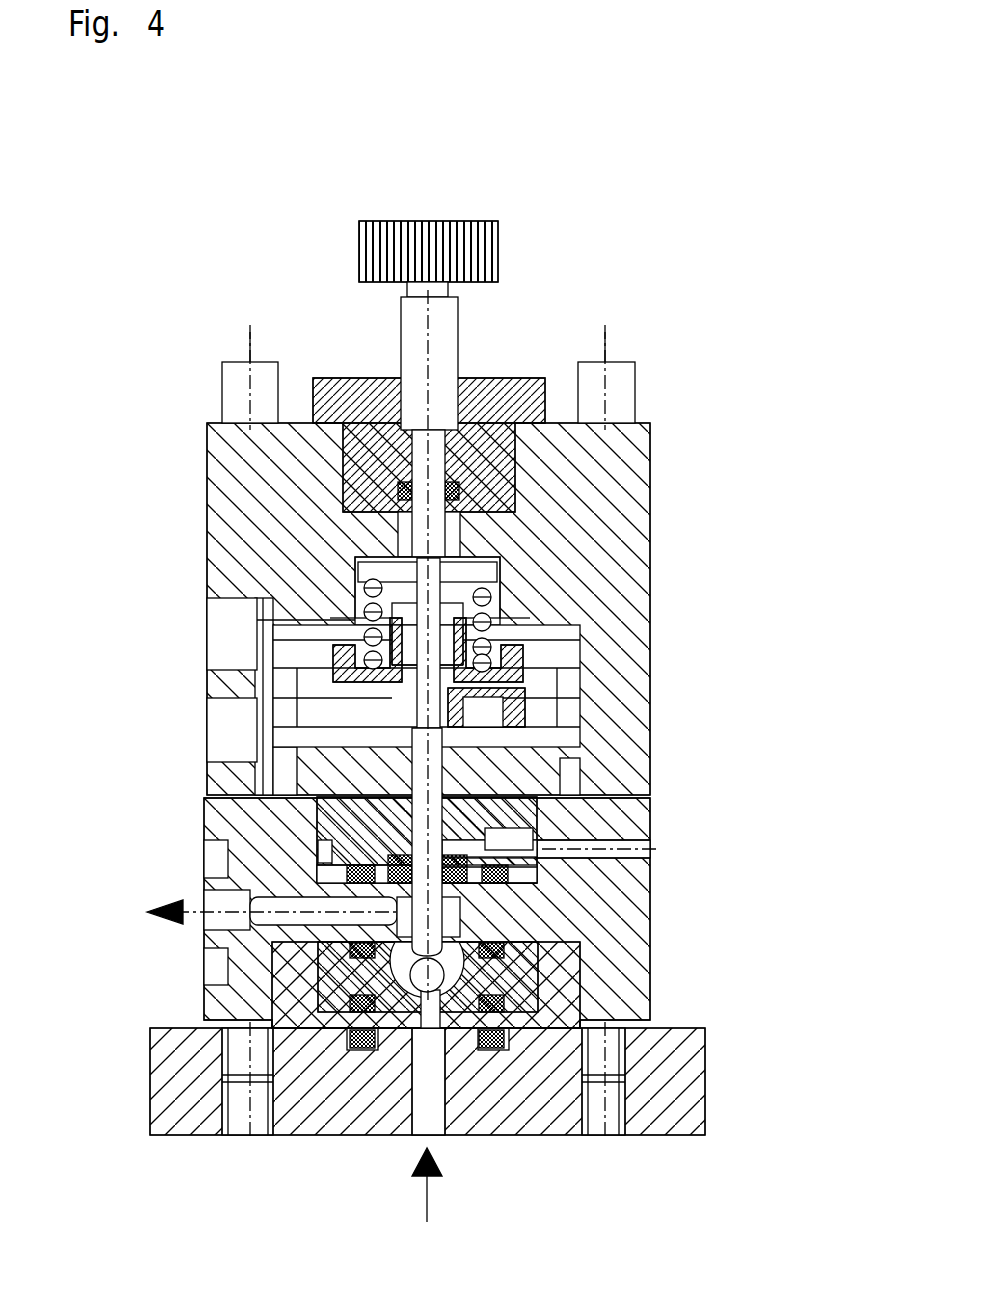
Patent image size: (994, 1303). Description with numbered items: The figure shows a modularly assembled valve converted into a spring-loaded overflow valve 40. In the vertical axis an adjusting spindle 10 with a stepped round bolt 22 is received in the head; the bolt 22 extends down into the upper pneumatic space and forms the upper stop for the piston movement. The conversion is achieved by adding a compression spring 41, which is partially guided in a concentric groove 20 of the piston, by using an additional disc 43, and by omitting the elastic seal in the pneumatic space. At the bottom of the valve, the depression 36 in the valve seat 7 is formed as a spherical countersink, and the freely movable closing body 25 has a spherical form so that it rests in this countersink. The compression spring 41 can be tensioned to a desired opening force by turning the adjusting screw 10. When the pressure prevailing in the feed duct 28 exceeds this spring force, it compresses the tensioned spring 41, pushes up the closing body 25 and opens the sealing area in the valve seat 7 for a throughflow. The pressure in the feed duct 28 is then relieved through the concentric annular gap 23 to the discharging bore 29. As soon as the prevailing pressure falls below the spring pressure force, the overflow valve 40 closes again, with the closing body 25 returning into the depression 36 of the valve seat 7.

The adjusting spindle 10 is at (425, 350).
The stepped round bolt 22 is at (428, 535).
The additional disc 43 is at (478, 552).
The compression spring 41 is at (492, 596).
The concentric groove 20 is at (492, 654).
The spring-loaded overflow valve 40 is at (700, 743).
The concentric annular gap 23 is at (450, 917).
The discharging bore 29 is at (237, 923).
The depression 36 is at (390, 957).
The valve seat 7 is at (318, 978).
The freely movable closing body 25 is at (427, 975).
The feed duct 28 is at (425, 1100).